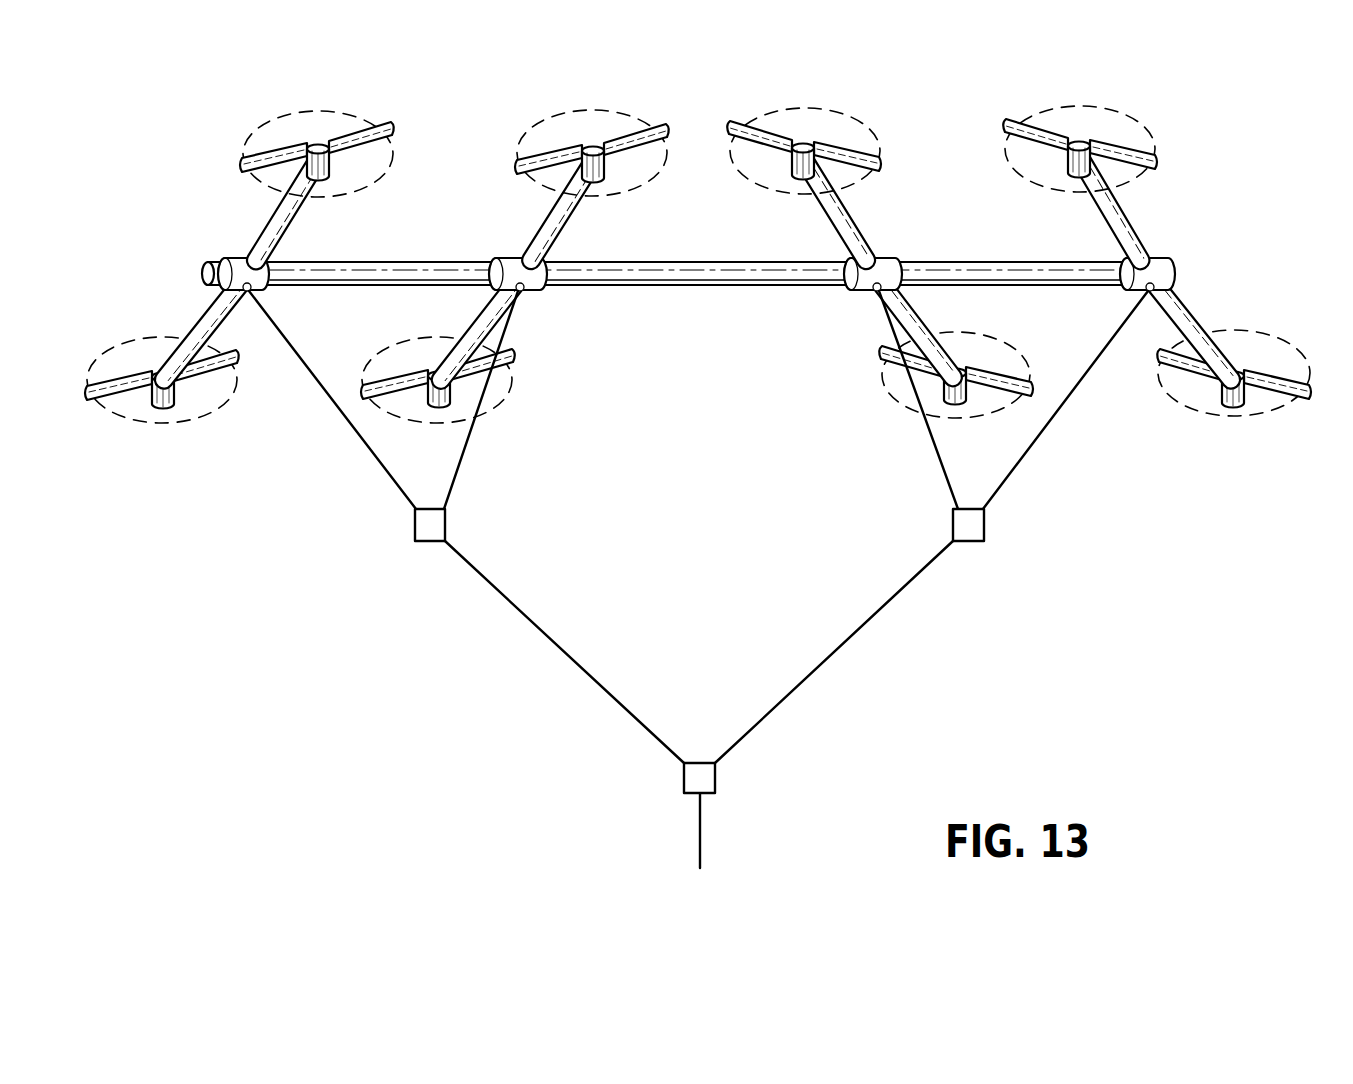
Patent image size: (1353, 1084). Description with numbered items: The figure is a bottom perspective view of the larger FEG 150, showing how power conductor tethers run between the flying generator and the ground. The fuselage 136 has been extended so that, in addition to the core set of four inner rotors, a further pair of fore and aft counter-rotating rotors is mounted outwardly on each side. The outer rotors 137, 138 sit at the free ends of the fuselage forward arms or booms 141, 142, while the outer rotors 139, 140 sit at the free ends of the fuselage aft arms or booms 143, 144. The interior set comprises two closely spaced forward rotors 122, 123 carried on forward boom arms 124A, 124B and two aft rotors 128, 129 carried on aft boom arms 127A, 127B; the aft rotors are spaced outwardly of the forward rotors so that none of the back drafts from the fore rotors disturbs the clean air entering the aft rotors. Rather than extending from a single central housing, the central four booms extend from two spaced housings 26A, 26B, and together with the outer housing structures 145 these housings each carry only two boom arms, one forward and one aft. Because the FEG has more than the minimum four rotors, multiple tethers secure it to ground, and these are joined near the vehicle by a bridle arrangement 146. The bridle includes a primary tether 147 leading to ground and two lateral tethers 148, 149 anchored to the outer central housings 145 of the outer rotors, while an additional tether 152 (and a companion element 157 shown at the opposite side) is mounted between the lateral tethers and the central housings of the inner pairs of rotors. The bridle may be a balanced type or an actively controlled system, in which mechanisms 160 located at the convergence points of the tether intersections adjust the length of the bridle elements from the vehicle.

The housing 26A is at (563, 262).
The housing 26B is at (860, 292).
The forward rotor 122 is at (585, 145).
The forward rotor 123 is at (803, 140).
The forward boom arm 124A is at (548, 214).
The forward boom arm 124B is at (828, 214).
The aft boom arm 127A is at (480, 323).
The aft boom arm 127B is at (916, 320).
The aft rotor 128 is at (438, 406).
The aft rotor 129 is at (968, 402).
The fuselage 136 is at (414, 261).
The rotor 137 is at (318, 146).
The rotor 138 is at (1086, 130).
The rotor 139 is at (160, 406).
The rotor 140 is at (1235, 406).
The fuselage forward arm 141 is at (268, 226).
The fuselage forward arm 142 is at (1135, 210).
The fuselage aft arm 143 is at (200, 316).
The fuselage aft arm 144 is at (1197, 323).
The housing structure 145 is at (228, 259).
The bridle arrangement 146 is at (568, 672).
The primary tether 147 is at (700, 816).
The lateral tether 148 is at (483, 578).
The lateral tether 149 is at (858, 637).
The FEG 150 is at (695, 303).
The additional tether 152 is at (922, 422).
The suspension line 157 is at (478, 431).
The mechanism 160 is at (415, 525).